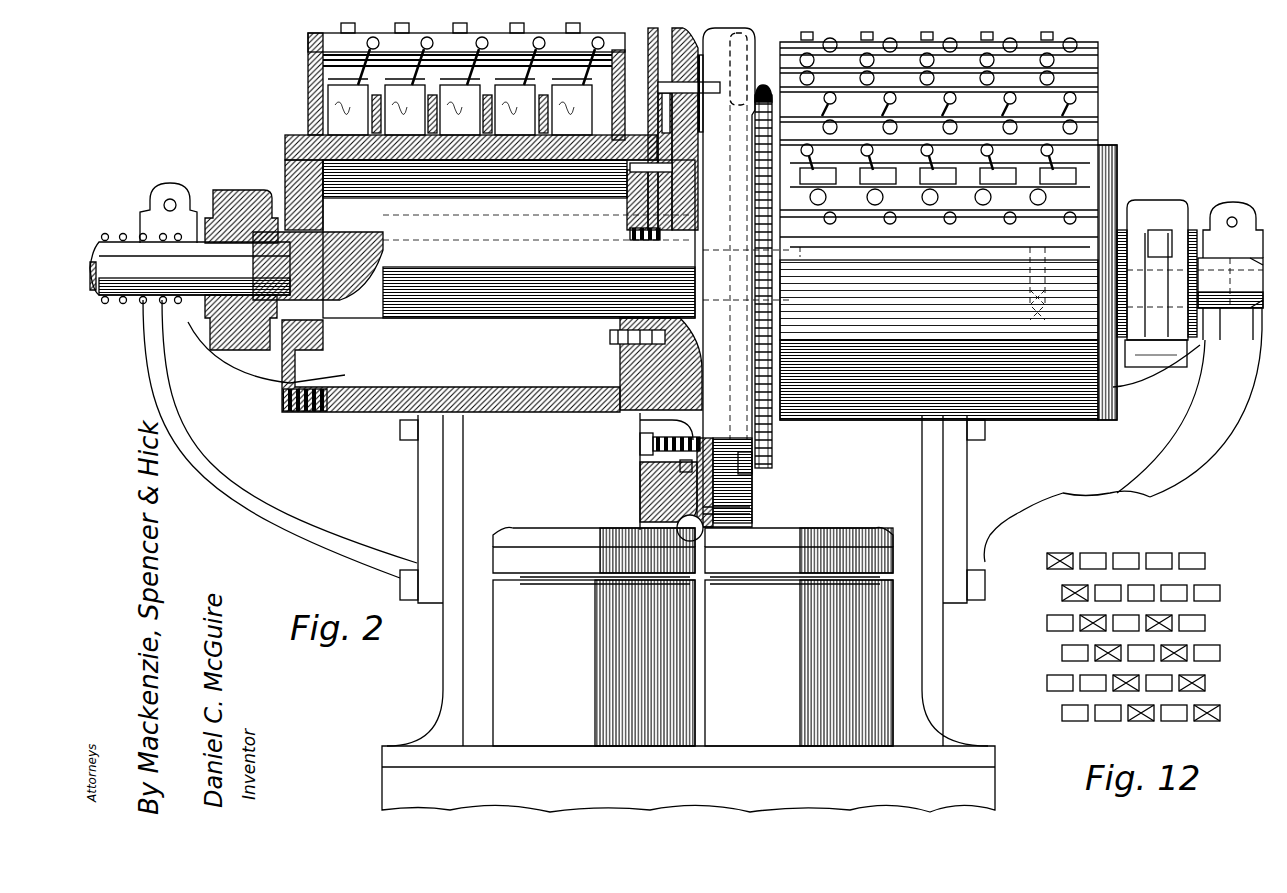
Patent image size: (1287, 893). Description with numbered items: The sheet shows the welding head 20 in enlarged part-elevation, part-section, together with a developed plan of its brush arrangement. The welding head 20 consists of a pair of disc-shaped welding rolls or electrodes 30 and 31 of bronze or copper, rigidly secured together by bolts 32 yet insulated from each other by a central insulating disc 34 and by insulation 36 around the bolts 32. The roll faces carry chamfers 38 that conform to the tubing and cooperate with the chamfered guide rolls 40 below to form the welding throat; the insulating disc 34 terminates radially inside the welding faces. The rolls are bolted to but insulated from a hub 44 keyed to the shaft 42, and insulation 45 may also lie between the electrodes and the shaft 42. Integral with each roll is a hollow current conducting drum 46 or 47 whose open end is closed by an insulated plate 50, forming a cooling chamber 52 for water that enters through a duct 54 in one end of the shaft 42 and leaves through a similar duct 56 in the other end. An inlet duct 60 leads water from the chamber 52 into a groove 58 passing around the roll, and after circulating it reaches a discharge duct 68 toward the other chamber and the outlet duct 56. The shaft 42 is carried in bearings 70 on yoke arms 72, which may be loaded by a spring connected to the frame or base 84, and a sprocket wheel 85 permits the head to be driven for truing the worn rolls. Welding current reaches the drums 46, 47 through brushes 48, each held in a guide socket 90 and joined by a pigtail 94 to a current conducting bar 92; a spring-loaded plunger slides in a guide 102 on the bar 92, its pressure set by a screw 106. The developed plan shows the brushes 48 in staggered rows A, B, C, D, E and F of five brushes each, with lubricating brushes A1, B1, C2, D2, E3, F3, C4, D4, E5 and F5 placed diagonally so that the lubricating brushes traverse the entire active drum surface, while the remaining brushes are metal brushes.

In FIG. 2, the welding head 20 is at (760, 501).
In FIG. 2, the welding roll or electrode 30 is at (642, 496).
In FIG. 2, the welding roll or electrode 31 is at (750, 509).
In FIG. 2, the bolts 32 is at (645, 449).
In FIG. 2, the central insulating disc 34 is at (753, 467).
In FIG. 2, the insulation 36 is at (642, 424).
In FIG. 2, the chamfers 38 is at (660, 522).
In FIG. 2, the guide rolls 40 is at (558, 540).
In FIG. 2, the shaft 42 is at (507, 243).
In FIG. 2, the hub 44 is at (625, 365).
In FIG. 2, the insulation 45 is at (640, 240).
In FIG. 2, the current conducting drum 46 is at (370, 414).
In FIG. 2, the current conducting drum 47 is at (1063, 405).
In FIG. 2, the brushes 48 is at (335, 123).
In FIG. 2, the plate 50 is at (290, 175).
In FIG. 2, the chamber 52 is at (342, 384).
In FIG. 2, the duct 54 is at (362, 246).
In FIG. 2, the duct 56 is at (1222, 300).
In FIG. 2, the groove 58 is at (680, 467).
In FIG. 2, the inlet duct 60 is at (664, 104).
In FIG. 2, the discharge duct 68 is at (748, 105).
In FIG. 2, the bearings 70 is at (222, 197).
In FIG. 2, the yoke arms 72 is at (238, 352).
In FIG. 2, the frame or base 84 is at (383, 750).
In FIG. 2, the sprocket wheel 85 is at (773, 430).
In FIG. 2, the guide socket 90 is at (312, 102).
In FIG. 2, the current conducting bar 92 is at (1085, 125).
In FIG. 2, the pigtail 94 is at (322, 62).
In FIG. 2, the guide 102 is at (318, 38).
In FIG. 2, the screw 106 is at (578, 34).
In FIG. 12, the row of brushes A is at (1144, 562).
In FIG. 12, the row of brushes B is at (1152, 593).
In FIG. 12, the row of brushes C is at (1145, 623).
In FIG. 12, the row of brushes D is at (1153, 653).
In FIG. 12, the row of brushes E is at (1144, 683).
In FIG. 12, the row of brushes F is at (1151, 713).
In FIG. 12, the lubricating brush A1 is at (1050, 556).
In FIG. 12, the lubricating brush B1 is at (1062, 591).
In FIG. 12, the lubricating brush C2 is at (1090, 614).
In FIG. 12, the lubricating brush C4 is at (1155, 632).
In FIG. 12, the lubricating brush D2 is at (1100, 660).
In FIG. 12, the lubricating brush D4 is at (1165, 661).
In FIG. 12, the lubricating brush E3 is at (1125, 692).
In FIG. 12, the lubricating brush E5 is at (1190, 692).
In FIG. 12, the lubricating brush F3 is at (1140, 722).
In FIG. 12, the lubricating brush F5 is at (1205, 722).